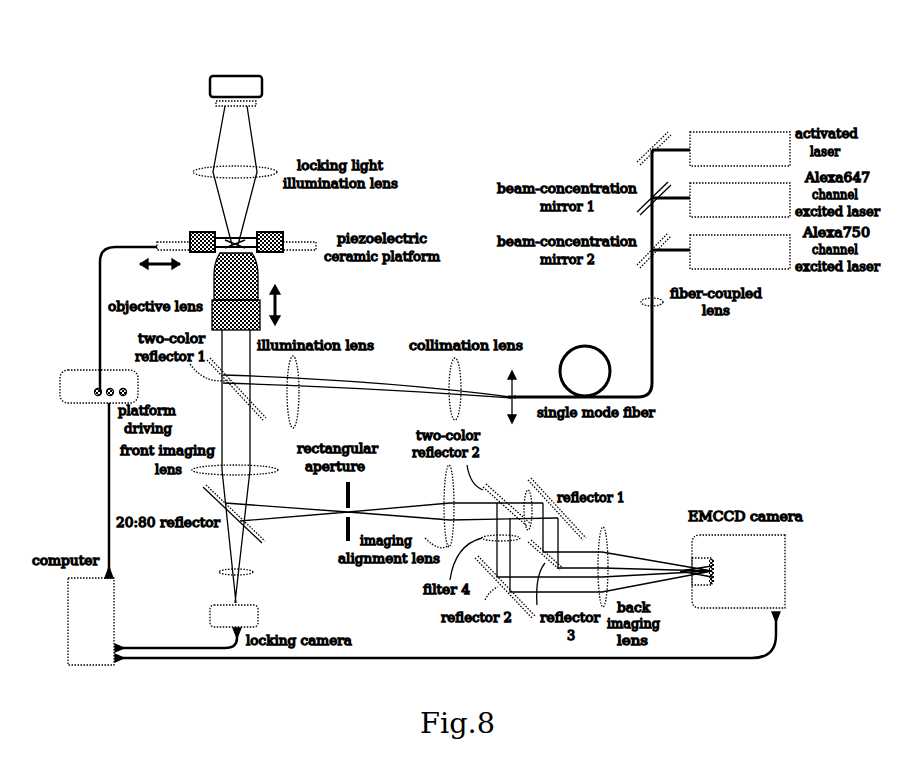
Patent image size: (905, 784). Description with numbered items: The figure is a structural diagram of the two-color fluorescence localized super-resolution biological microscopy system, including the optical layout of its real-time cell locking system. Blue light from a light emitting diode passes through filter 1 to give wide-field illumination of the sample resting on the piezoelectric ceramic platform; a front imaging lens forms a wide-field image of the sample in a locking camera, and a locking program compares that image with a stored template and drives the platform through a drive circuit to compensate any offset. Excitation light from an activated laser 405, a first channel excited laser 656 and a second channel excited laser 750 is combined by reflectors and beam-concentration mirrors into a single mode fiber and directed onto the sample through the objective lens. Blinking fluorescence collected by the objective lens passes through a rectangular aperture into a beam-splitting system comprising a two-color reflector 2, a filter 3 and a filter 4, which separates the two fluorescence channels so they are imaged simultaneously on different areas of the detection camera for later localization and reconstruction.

The filter 1 is at (285, 92).
The two-color reflector 2 is at (209, 573).
The filter 3 is at (527, 495).
The filter 4 is at (615, 148).
The 405nm activated laser 405 is at (740, 149).
The 656nm Alexa647 channel excited laser 656 is at (740, 200).
The 750nm Alexa750 channel excited laser 750 is at (740, 252).